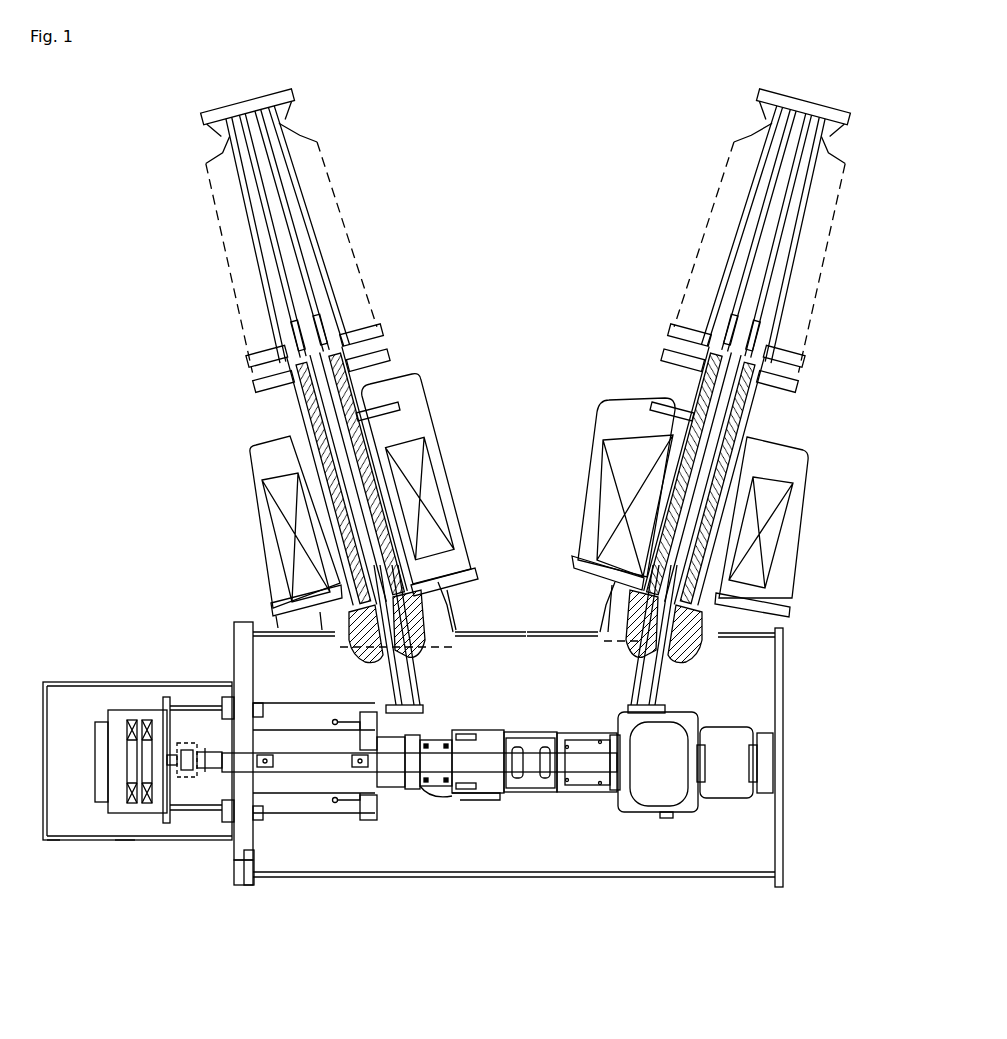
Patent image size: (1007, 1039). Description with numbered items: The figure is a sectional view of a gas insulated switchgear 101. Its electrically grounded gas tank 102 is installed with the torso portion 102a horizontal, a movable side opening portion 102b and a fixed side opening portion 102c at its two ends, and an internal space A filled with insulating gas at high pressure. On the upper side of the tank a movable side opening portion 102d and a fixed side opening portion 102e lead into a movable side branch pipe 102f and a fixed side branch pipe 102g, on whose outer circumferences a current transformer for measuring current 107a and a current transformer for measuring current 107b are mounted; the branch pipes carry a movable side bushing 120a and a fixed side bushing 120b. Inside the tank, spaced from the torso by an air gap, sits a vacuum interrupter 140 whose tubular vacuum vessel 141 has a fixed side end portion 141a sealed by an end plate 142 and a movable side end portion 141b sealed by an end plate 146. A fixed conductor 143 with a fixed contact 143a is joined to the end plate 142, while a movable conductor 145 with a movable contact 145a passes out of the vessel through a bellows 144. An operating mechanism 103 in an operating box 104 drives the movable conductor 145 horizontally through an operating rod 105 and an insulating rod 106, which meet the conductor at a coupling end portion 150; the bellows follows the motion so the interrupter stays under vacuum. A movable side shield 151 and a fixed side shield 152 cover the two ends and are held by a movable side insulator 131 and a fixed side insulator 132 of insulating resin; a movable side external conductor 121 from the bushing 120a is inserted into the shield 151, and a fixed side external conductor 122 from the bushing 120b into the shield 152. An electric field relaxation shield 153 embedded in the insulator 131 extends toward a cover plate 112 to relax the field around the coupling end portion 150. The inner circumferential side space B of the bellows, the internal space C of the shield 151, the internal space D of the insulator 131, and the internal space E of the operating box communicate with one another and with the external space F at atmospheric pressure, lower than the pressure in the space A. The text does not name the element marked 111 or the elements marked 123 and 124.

The gas insulated switchgear 101 is at (152, 178).
The gas tank 102 is at (720, 880).
The torso portion 102a is at (300, 878).
The movable side opening portion 102b is at (235, 870).
The fixed side opening portion 102c is at (783, 870).
The movable side opening portion 102d is at (447, 632).
The fixed side opening portion 102e is at (603, 632).
The movable side branch pipe 102f is at (392, 432).
The fixed side branch pipe 102g is at (648, 435).
The operating mechanism 103 is at (113, 728).
The operating box 104 is at (112, 840).
The operating rod 105 is at (232, 818).
The insulating rod 106 is at (298, 878).
The current transformer for measuring current 107a is at (262, 523).
The current transformer for measuring current 107b is at (650, 466).
The right end plate 111 is at (783, 843).
The cover plate 112 is at (235, 678).
The movable side bushing 120a is at (240, 298).
The fixed side bushing 120b is at (740, 236).
The movable side external conductor 121 is at (386, 698).
The fixed side external conductor 122 is at (668, 677).
The first plunger 123 is at (375, 497).
The second plunger 124 is at (672, 522).
The movable side insulator 131 is at (249, 870).
The fixed side insulator 132 is at (730, 765).
The vacuum interrupter 140 is at (545, 795).
The vacuum vessel 141 is at (598, 795).
The fixed side end portion 141a is at (628, 795).
The movable side end portion 141b is at (458, 800).
The end plate 142 is at (645, 815).
The fixed conductor 143 is at (570, 795).
The fixed contact 143a is at (558, 745).
The bellows 144 is at (470, 795).
The movable conductor 145 is at (510, 795).
The movable contact 145a is at (513, 745).
The end plate 146 is at (430, 790).
The coupling end portion 150 is at (365, 757).
The movable side shield 151 is at (392, 790).
The fixed side shield 152 is at (688, 805).
The electric field relaxation shield 153 is at (352, 788).
The internal space A is at (545, 692).
The inner circumferential side space B is at (438, 782).
The internal space C is at (348, 795).
The internal space D is at (292, 792).
The internal space E is at (68, 840).
The external space F is at (130, 850).